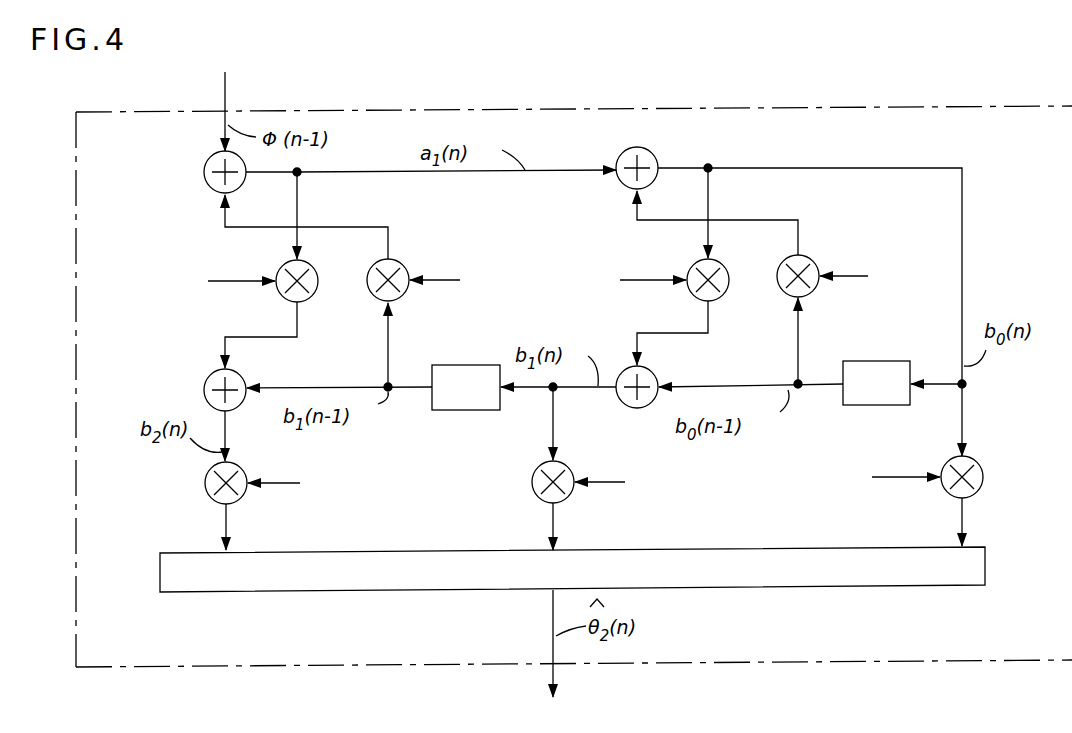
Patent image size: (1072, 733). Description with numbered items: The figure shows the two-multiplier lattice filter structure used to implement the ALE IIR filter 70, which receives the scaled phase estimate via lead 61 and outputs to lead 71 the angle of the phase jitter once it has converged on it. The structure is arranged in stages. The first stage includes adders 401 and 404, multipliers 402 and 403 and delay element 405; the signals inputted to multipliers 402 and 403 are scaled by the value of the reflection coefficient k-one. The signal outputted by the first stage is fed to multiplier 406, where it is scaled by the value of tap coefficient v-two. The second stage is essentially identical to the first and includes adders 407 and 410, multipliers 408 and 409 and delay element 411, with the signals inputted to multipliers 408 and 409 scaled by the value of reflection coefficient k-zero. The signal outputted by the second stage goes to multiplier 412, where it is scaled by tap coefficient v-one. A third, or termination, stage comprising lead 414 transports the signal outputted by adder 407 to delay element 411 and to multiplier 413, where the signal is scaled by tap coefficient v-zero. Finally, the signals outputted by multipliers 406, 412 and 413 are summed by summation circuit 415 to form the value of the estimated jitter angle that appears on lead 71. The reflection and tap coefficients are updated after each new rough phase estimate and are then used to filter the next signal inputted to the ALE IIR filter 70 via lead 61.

The lead 61 is at (224, 104).
The ALE IIR filter 70 is at (548, 83).
The lead 71 is at (553, 610).
The adder 401 is at (210, 185).
The multiplier 402 is at (284, 264).
The multiplier 403 is at (400, 263).
The adder 404 is at (206, 384).
The delay element 405 is at (480, 364).
The multiplier 406 is at (212, 500).
The adder 407 is at (655, 152).
The multiplier 408 is at (692, 264).
The multiplier 409 is at (811, 259).
The adder 410 is at (626, 405).
The delay element 411 is at (870, 362).
The multiplier 412 is at (538, 494).
The multiplier 413 is at (980, 462).
The lead 414 is at (964, 237).
The summation circuit 415 is at (800, 588).